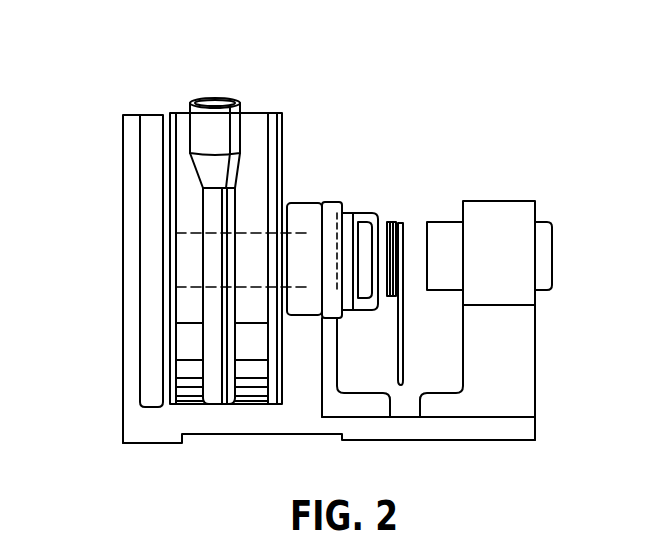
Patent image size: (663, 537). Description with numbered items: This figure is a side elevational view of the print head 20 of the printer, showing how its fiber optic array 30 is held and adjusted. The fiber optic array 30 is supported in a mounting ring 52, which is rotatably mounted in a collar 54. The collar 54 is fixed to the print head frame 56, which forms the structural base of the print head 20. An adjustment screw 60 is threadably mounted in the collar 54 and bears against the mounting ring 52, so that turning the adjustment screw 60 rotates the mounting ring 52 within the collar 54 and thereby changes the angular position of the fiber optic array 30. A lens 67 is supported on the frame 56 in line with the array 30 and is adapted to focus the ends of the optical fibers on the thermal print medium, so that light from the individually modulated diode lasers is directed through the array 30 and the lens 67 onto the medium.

The print head 20 is at (480, 82).
The fiber optic array 30 is at (355, 200).
The mounting ring 52 is at (310, 193).
The collar 54 is at (268, 107).
The print head frame 56 is at (117, 377).
The adjustment screw 60 is at (202, 97).
The lens 67 is at (552, 290).